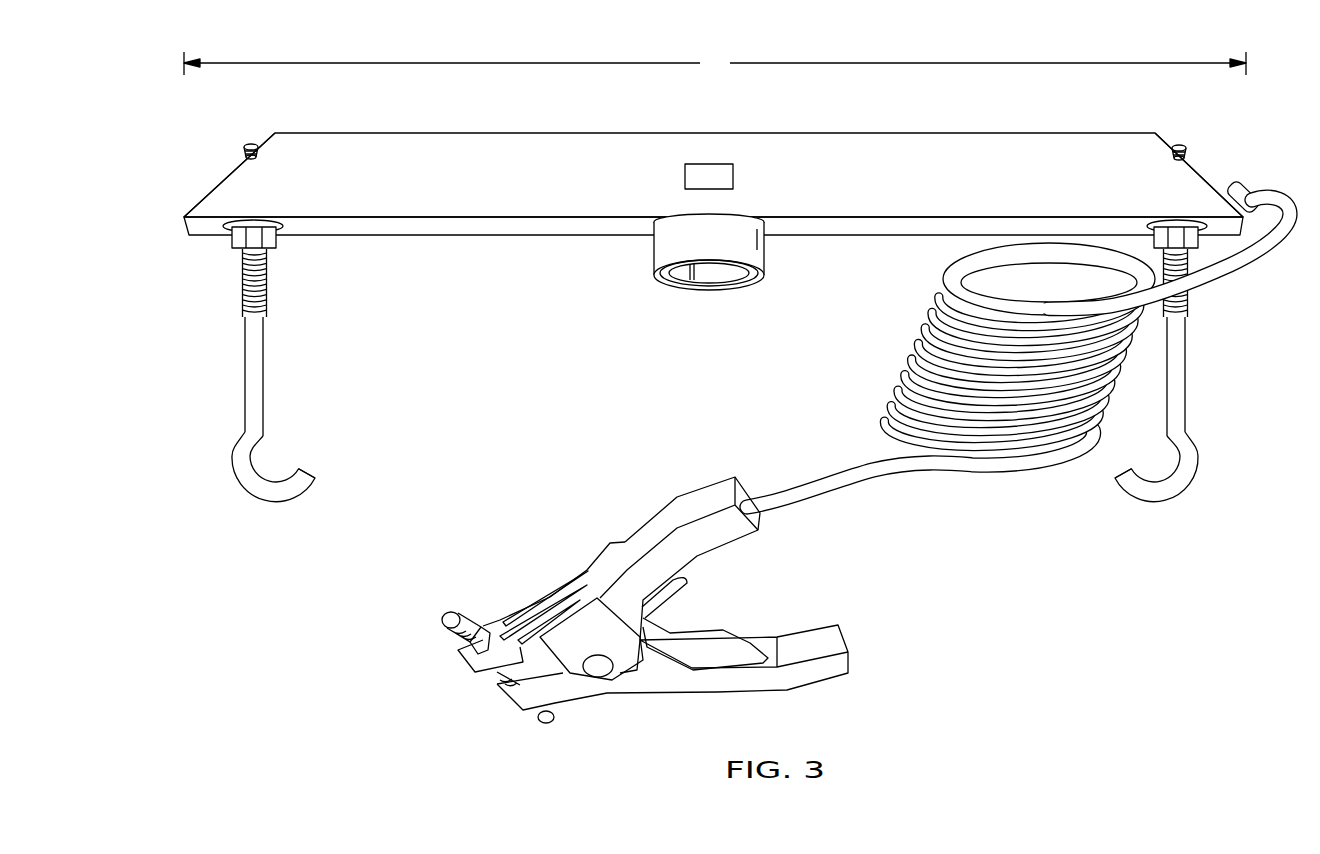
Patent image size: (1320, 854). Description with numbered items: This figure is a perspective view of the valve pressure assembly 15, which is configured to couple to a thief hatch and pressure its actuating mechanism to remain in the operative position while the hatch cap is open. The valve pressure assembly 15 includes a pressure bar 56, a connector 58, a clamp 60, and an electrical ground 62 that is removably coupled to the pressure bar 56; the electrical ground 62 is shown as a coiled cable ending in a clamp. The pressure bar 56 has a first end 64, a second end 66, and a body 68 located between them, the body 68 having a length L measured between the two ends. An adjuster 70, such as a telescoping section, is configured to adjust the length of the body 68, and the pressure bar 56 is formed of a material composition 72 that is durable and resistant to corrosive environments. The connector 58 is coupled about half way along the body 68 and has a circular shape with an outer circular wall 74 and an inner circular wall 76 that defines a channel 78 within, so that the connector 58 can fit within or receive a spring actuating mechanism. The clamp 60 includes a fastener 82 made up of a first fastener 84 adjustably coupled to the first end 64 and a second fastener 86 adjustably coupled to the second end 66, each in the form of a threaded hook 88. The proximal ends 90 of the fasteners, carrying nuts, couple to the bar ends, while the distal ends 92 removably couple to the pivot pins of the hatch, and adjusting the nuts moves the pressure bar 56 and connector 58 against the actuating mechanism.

The valve pressure assembly 15 is at (1024, 40).
The pressure bar 56 is at (713, 175).
The connector 58 is at (705, 280).
The clamp 60 is at (220, 328).
The electrical ground 62 is at (876, 490).
The first end 64 is at (213, 191).
The second end 66 is at (1200, 176).
The body 68 is at (826, 160).
The adjuster 70 is at (718, 165).
The material composition 72 is at (399, 195).
The outer circular wall 74 is at (766, 257).
The inner circular wall 76 is at (700, 282).
The channel 78 is at (735, 280).
The fastener 82 is at (243, 337).
The first fastener 84 is at (245, 387).
The second fastener 86 is at (1188, 382).
The threaded hook 88 is at (262, 499).
The proximal ends 90 is at (250, 144).
The distal ends 92 is at (306, 466).